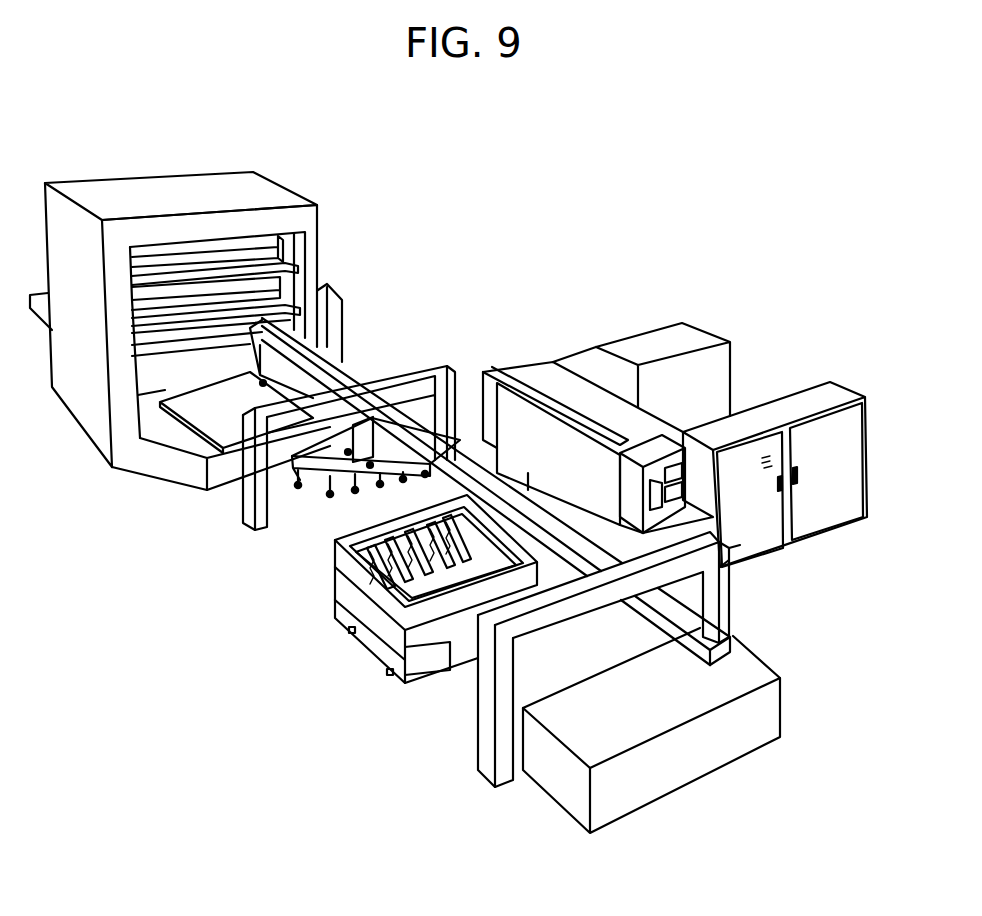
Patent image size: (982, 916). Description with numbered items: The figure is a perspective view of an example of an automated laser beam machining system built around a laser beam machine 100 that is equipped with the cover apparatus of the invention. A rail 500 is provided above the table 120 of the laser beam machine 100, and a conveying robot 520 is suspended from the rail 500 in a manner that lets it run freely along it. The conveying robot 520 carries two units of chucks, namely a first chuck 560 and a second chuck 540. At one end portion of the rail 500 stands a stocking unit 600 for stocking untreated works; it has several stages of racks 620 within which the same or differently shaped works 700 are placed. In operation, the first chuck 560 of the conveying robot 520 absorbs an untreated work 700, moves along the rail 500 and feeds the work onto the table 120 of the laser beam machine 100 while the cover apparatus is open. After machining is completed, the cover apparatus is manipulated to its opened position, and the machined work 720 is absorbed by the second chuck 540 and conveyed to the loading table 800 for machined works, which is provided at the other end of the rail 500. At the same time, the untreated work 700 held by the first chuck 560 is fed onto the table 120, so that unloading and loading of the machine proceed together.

The laser beam machine 100 is at (744, 330).
The table 120 is at (427, 603).
The rail 500 is at (457, 455).
The conveying robot 520 is at (347, 363).
The second chuck 540 is at (337, 472).
The first chuck 560 is at (247, 393).
The stocking unit 600 is at (287, 192).
The racks 620 is at (296, 307).
The untreated work 700 is at (187, 303).
The machined work 720 is at (473, 540).
The loading table 800 is at (767, 707).